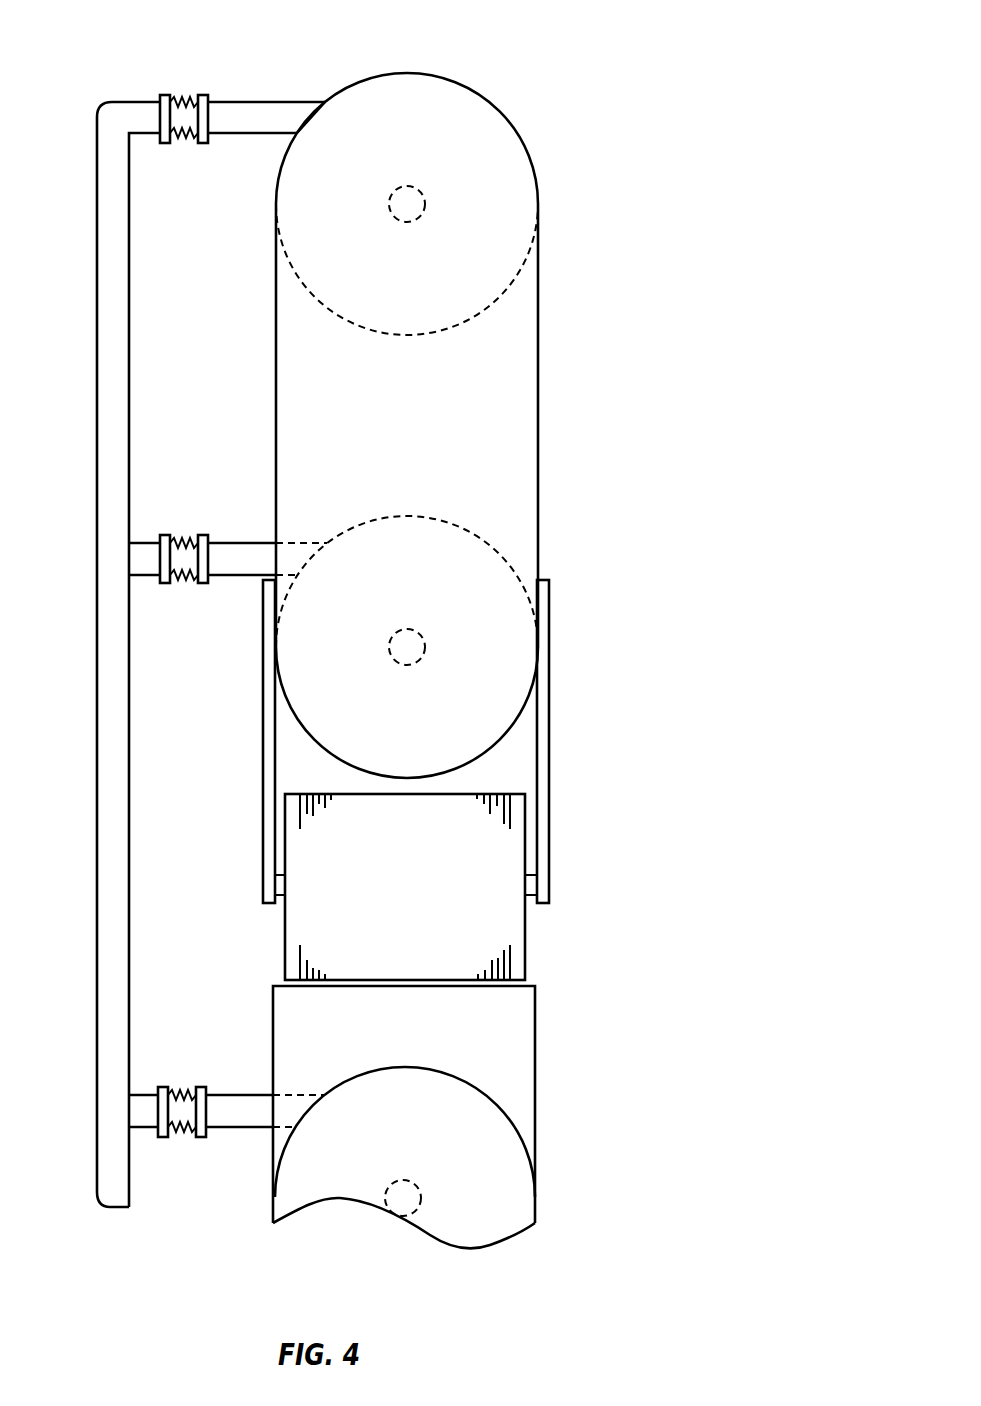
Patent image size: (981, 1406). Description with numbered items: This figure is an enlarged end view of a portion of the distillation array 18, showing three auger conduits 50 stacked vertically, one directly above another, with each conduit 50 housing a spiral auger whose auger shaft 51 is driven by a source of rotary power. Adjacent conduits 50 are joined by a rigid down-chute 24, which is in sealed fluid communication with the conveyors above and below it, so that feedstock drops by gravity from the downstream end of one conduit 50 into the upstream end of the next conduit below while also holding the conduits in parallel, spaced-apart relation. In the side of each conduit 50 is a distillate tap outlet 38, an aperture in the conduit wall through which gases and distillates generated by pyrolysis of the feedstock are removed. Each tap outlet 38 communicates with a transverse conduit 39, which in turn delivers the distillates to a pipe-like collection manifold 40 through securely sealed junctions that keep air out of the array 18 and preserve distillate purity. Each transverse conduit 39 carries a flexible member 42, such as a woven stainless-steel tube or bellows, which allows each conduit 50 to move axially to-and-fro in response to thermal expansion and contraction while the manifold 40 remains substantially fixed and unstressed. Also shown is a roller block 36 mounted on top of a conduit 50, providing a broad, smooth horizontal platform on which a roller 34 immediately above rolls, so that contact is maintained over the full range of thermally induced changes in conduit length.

The distillation array 18 is at (596, 52).
The down-chute 24 is at (528, 408).
The roller 34 is at (470, 895).
The roller block 36 is at (520, 1052).
The distillate tap outlet 38 is at (333, 97).
The transverse conduit 39 is at (222, 110).
The collection manifold 40 is at (110, 343).
The flexible member 42 is at (178, 100).
The auger conduit 50 is at (509, 120).
The auger shaft 51 is at (425, 204).